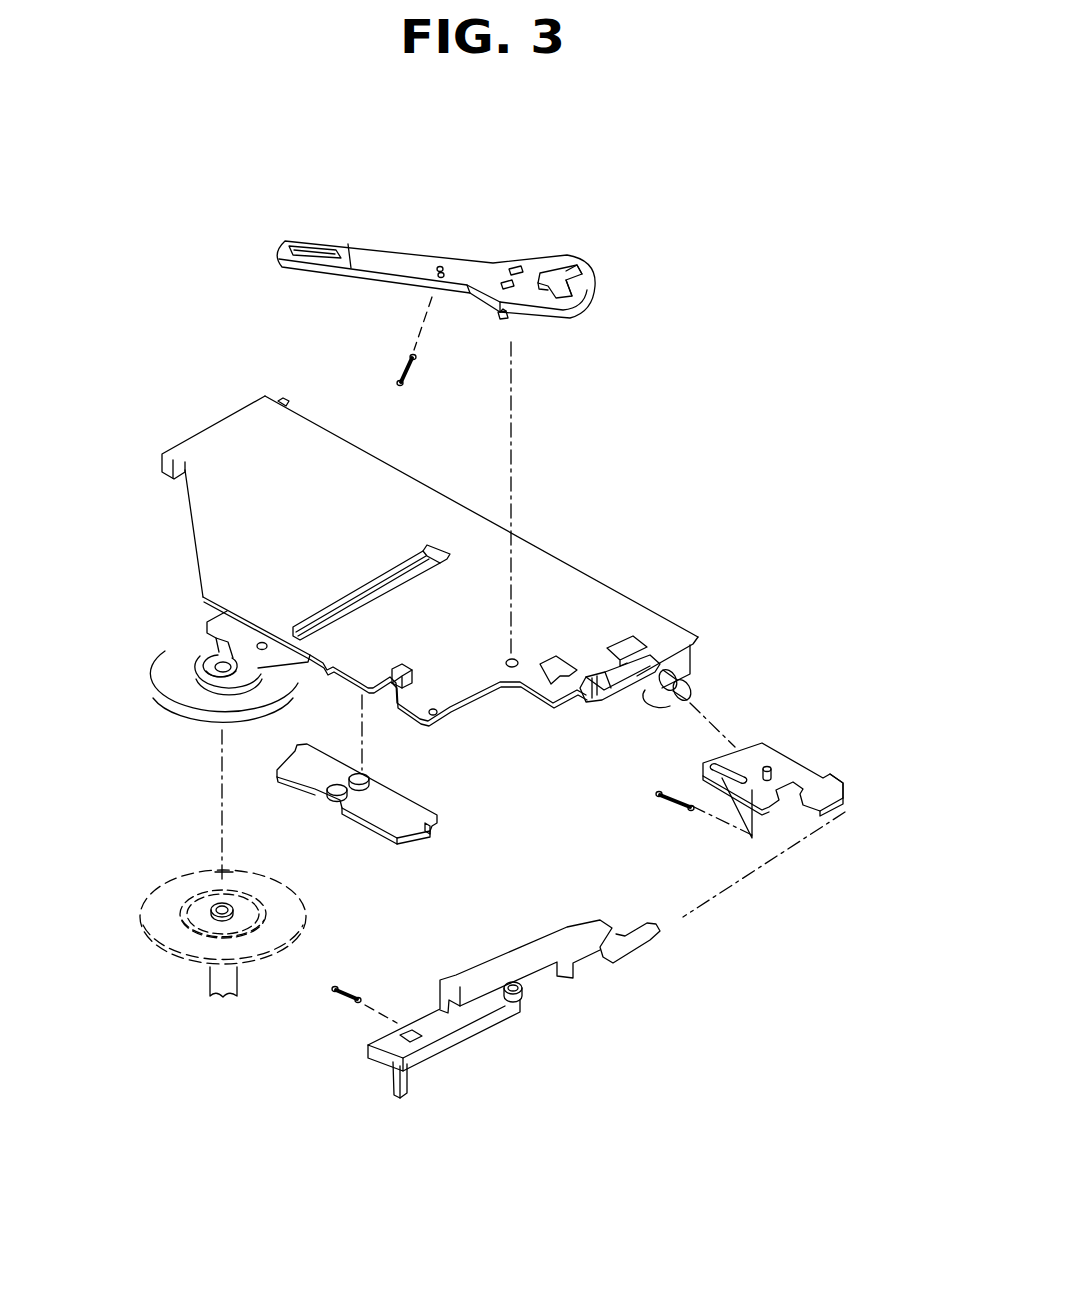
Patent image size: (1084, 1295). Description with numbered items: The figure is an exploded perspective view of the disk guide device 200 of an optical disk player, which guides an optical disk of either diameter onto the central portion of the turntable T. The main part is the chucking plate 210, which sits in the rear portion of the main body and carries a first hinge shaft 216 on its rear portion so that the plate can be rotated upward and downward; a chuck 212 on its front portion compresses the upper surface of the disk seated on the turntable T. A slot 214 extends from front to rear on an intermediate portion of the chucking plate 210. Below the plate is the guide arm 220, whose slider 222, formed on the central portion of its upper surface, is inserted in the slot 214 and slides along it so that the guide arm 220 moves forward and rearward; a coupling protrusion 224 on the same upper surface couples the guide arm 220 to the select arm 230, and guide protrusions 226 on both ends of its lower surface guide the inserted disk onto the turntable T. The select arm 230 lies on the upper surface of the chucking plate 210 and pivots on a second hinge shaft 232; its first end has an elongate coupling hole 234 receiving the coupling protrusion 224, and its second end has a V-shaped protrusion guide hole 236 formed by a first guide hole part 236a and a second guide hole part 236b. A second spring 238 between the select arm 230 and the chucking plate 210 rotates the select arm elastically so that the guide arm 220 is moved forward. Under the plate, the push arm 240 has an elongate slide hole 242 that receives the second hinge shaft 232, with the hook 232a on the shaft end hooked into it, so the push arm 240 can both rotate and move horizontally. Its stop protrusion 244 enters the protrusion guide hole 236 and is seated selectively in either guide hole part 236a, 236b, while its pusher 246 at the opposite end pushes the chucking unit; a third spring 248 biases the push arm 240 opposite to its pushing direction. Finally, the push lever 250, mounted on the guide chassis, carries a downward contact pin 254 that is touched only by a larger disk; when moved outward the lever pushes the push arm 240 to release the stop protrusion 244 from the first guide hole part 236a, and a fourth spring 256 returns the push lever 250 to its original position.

The disk guide device 200 is at (100, 477).
The chucking plate 210 is at (222, 445).
The chuck 212 is at (170, 676).
The slot 214 is at (400, 570).
The first hinge shaft 216 is at (700, 690).
The guide arm 220 is at (315, 778).
The slider 222 is at (367, 772).
The coupling protrusion 224 is at (333, 798).
The guide protrusion 226 is at (443, 824).
The select arm 230 is at (383, 252).
The second hinge shaft 232 is at (509, 318).
The hook 232a is at (502, 318).
The elongate coupling hole 234 is at (300, 252).
The protrusion guide hole 236 is at (548, 278).
The first guide hole part 236a is at (583, 292).
The second guide hole part 236b is at (576, 262).
The second spring 238 is at (397, 366).
The push arm 240 is at (785, 770).
The elongate slide hole 242 is at (717, 778).
The stop protrusion 244 is at (768, 782).
The pusher 246 is at (828, 780).
The third spring 248 is at (660, 796).
The push lever 250 is at (485, 1002).
The contact pin 254 is at (407, 1083).
The fourth spring 256 is at (335, 995).
The turntable T is at (150, 902).